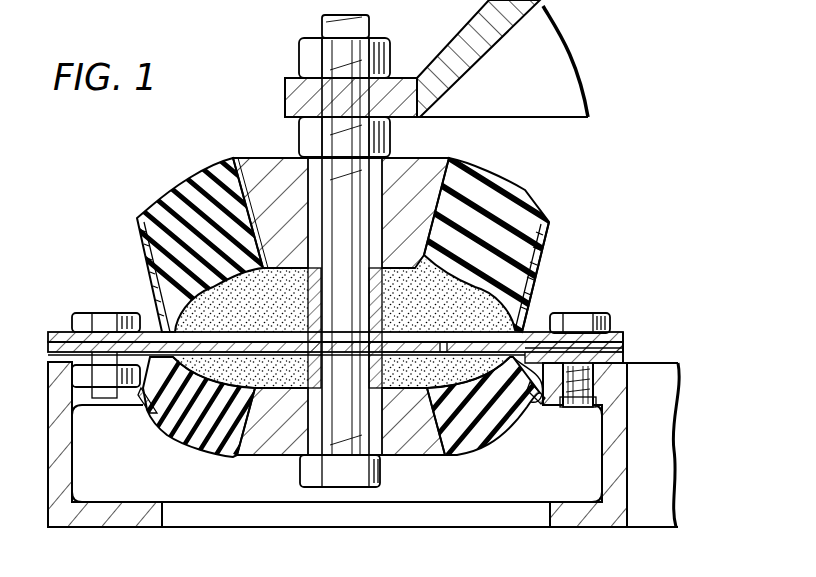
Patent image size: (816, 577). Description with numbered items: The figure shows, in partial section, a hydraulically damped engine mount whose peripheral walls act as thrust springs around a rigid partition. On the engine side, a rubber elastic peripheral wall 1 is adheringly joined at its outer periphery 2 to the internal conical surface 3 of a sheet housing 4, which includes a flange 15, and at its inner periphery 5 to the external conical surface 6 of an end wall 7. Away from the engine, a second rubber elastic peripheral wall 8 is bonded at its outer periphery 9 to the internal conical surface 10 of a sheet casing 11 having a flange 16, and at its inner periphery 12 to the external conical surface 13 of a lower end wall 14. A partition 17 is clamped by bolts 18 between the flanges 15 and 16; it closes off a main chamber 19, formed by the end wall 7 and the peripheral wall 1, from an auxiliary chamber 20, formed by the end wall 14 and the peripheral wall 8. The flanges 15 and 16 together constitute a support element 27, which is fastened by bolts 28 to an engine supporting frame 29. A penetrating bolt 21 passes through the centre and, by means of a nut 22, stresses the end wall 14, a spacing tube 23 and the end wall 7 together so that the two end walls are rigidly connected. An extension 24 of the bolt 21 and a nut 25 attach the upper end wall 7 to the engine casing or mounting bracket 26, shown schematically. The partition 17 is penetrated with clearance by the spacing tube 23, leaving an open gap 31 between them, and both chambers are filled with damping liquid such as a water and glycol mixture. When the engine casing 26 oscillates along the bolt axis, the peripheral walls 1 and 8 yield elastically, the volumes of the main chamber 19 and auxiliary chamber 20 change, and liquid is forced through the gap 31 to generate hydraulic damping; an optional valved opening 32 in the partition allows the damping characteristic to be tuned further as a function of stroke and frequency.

The rubber elastic peripheral wall 1 is at (492, 197).
The outer periphery 2 is at (544, 252).
The internal conical surface 3 is at (515, 288).
The sheet housing 4 is at (149, 269).
The inner periphery 5 is at (256, 222).
The external conical surface 6 is at (248, 208).
The end wall 7 is at (420, 196).
The rubber elastic peripheral wall 8 is at (495, 428).
The outer periphery 9 is at (531, 388).
The internal conical surface 10 is at (510, 363).
The sheet casing 11 is at (143, 405).
The inner periphery 12 is at (250, 432).
The external conical surface 13 is at (242, 408).
The end wall 14 is at (432, 448).
The flange 15 is at (48, 335).
The flange 16 is at (48, 359).
The partition 17 is at (242, 345).
The bolts 18 is at (92, 313).
The main chamber 19 is at (265, 301).
The auxiliary chamber 20 is at (225, 381).
The penetrating bolt 21 is at (368, 464).
The nut 22 is at (390, 135).
The spacing tube 23 is at (382, 302).
The extension 24 is at (352, 26).
The nut 25 is at (304, 48).
The engine casing or mounting brackets 26 is at (474, 40).
The support element 27 is at (628, 335).
The bolts 28 is at (593, 313).
The engine supporting frame 29 is at (630, 445).
The gap 31 is at (301, 345).
The valved opening 32 is at (444, 341).